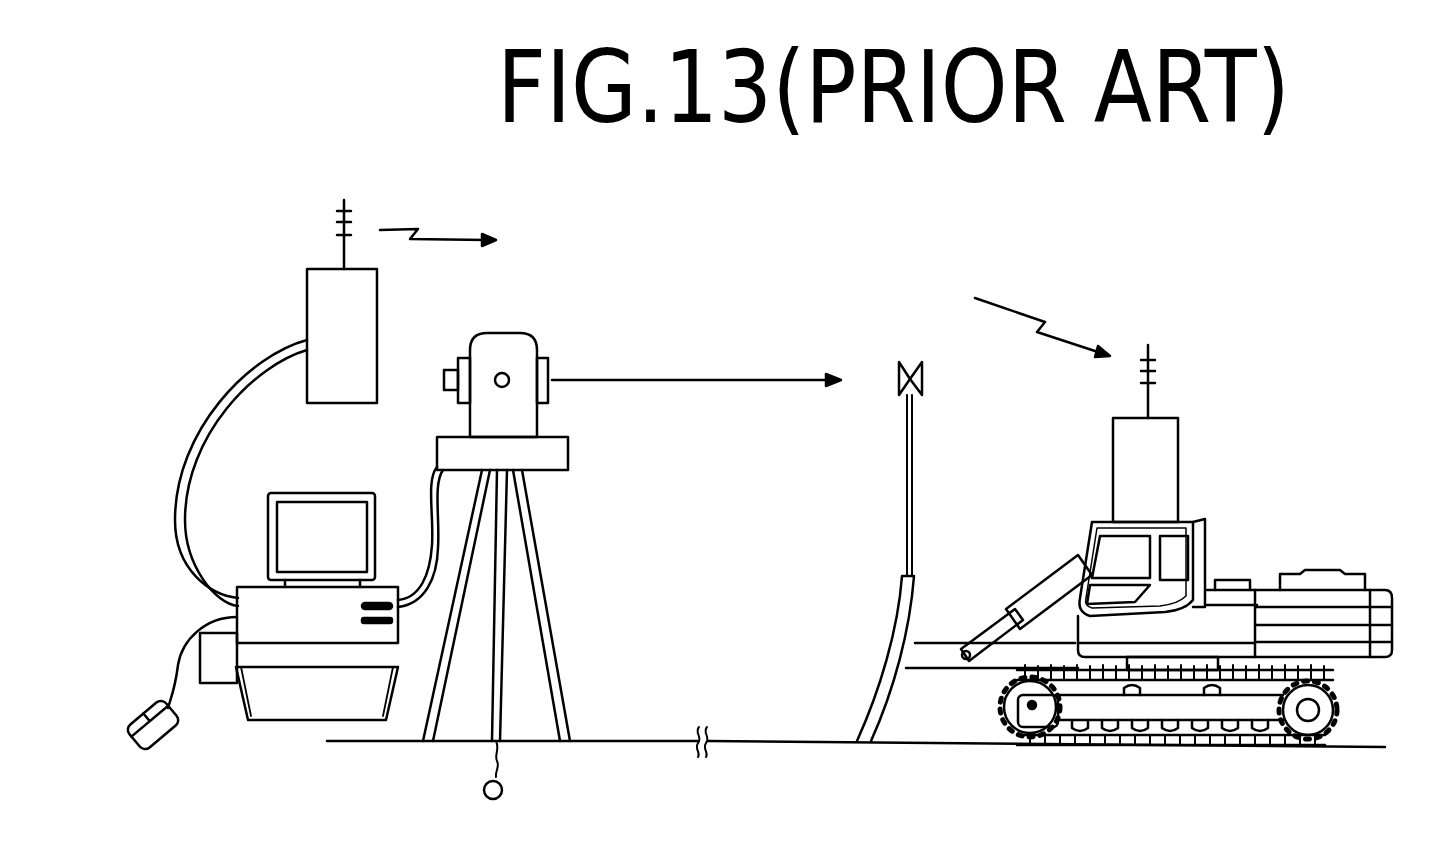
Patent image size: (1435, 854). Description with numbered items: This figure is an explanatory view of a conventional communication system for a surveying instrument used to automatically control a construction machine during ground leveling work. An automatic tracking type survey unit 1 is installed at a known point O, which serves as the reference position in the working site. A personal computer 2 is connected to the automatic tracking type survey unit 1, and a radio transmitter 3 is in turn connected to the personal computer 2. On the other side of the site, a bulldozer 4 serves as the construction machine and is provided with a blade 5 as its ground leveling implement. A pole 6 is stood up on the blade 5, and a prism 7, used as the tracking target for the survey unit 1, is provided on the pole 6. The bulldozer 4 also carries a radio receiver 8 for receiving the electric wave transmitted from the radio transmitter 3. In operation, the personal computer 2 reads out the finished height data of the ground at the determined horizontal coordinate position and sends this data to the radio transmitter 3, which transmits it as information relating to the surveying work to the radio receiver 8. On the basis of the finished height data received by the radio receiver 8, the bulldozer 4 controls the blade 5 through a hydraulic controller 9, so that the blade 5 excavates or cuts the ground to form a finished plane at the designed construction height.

The automatic tracking type survey unit 1 is at (553, 349).
The personal computer 2 is at (313, 628).
The radio transmitter 3 is at (310, 308).
The bulldozer 4 is at (1176, 545).
The blade 5 is at (888, 658).
The pole 6 is at (913, 532).
The prism 7 is at (926, 377).
The radio receiver 8 is at (1172, 453).
The hydraulic controller 9 is at (1030, 600).